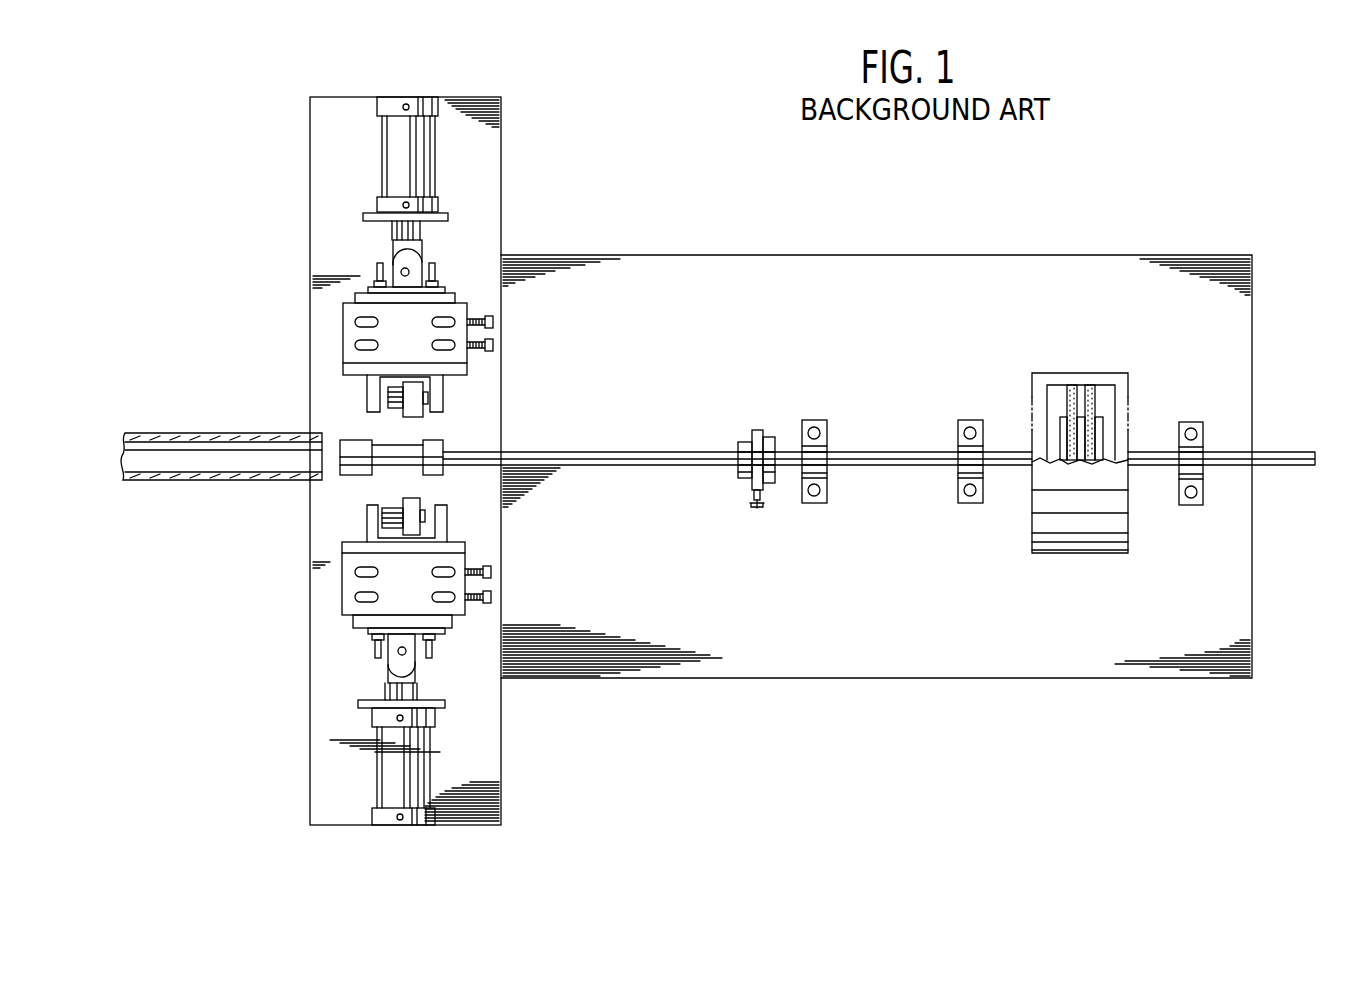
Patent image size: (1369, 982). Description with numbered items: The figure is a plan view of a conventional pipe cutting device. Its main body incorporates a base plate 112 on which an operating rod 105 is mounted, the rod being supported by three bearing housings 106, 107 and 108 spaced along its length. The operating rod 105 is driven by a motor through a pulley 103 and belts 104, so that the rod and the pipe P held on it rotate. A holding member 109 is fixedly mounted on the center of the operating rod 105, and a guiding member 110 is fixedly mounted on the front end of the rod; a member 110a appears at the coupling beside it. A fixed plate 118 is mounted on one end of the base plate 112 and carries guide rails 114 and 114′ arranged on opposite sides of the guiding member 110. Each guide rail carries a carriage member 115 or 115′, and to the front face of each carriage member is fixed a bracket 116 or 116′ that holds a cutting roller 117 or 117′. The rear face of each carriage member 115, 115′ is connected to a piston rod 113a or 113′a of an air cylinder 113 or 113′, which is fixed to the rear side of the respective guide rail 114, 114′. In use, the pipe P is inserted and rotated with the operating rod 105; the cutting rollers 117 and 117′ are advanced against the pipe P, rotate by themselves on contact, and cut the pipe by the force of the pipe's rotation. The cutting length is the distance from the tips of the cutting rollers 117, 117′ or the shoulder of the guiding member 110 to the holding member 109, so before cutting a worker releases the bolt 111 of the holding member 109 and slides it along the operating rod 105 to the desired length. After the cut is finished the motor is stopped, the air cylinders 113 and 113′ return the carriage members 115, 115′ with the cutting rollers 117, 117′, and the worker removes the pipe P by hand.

The pipe P is at (148, 433).
The pulley 103 is at (1105, 417).
The belts 104 is at (1090, 385).
The operating rod 105 is at (613, 452).
The bearing housing 106 is at (812, 503).
The bearing housing 107 is at (966, 503).
The bearing housing 108 is at (1186, 505).
The holding member 109 is at (757, 430).
The guiding member 110 is at (362, 447).
The coupling member 110a is at (426, 441).
The bolt 111 is at (757, 508).
The base plate 112 is at (862, 254).
The air cylinder 113 is at (414, 775).
The piston rod 113a is at (405, 695).
The air cylinder 113′ is at (407, 143).
The piston rod 113′a is at (410, 232).
The guide rail 114 is at (386, 672).
The guide rail 114′ is at (390, 232).
The carriage member 115 is at (342, 578).
The carriage member 115′ is at (345, 330).
The bracket 116 is at (370, 518).
The bracket 116′ is at (367, 383).
The cutting roller 117 is at (420, 500).
The cutting roller 117′ is at (425, 415).
The fixed plate 118 is at (313, 130).